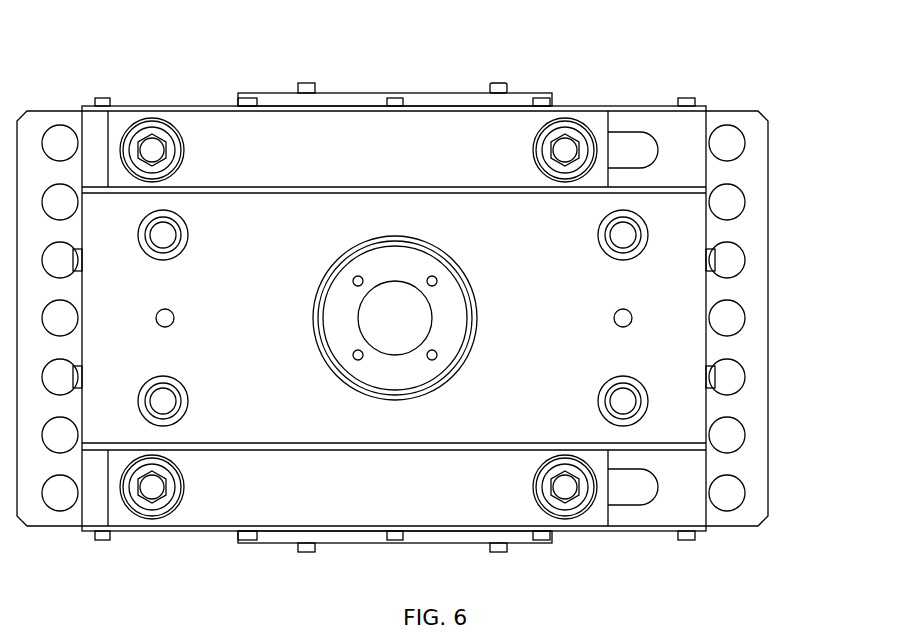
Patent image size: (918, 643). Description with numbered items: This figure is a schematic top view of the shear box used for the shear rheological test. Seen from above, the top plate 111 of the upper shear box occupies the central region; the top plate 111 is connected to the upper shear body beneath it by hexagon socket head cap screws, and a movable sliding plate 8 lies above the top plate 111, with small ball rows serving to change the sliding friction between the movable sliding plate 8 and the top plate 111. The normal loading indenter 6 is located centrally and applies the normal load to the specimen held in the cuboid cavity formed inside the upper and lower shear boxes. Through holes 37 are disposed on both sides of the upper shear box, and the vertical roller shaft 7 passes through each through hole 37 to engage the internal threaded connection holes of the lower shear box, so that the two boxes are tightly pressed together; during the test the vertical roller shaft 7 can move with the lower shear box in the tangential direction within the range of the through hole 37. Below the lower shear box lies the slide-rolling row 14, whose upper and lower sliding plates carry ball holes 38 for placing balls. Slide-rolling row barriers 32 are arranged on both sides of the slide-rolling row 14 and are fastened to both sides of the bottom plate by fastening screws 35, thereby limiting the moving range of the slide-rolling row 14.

The normal loading indenter 6 is at (448, 316).
The vertical roller shaft 7 is at (568, 487).
The movable sliding plate 8 is at (457, 510).
The slide-rolling row 14 is at (748, 172).
The slide-rolling row barrier 32 is at (330, 100).
The fastening screw 35 is at (503, 85).
The through hole 37 is at (616, 148).
The ball hole 38 is at (725, 145).
The top plate 111 is at (638, 270).